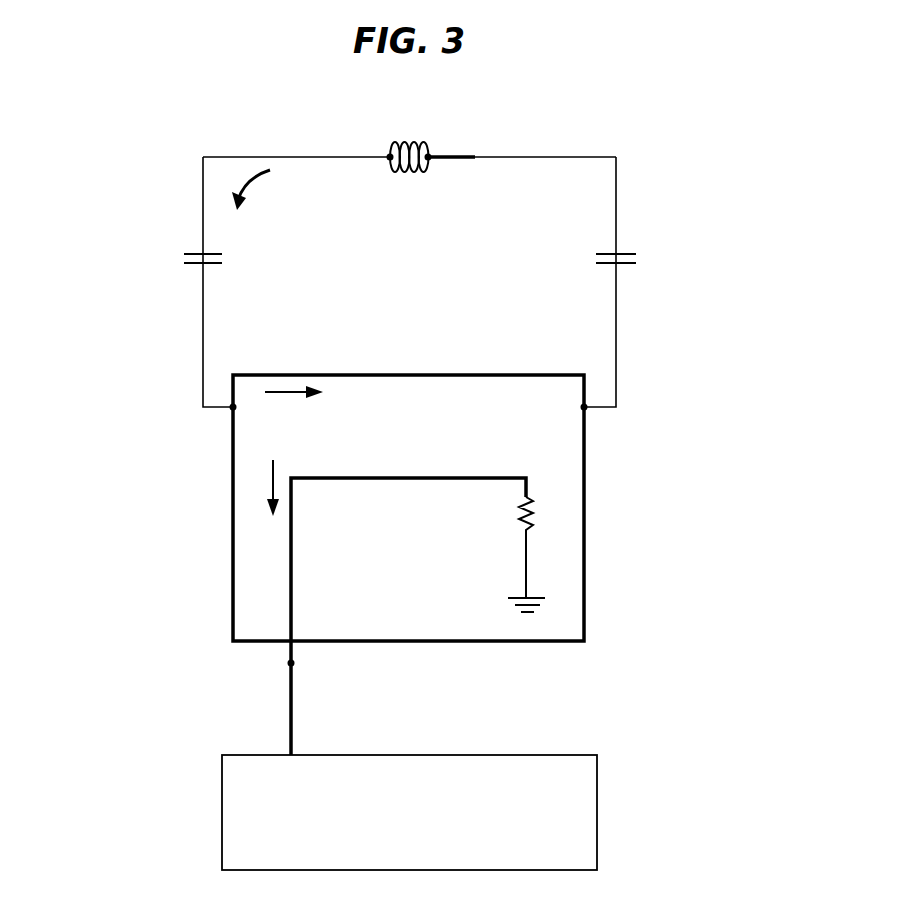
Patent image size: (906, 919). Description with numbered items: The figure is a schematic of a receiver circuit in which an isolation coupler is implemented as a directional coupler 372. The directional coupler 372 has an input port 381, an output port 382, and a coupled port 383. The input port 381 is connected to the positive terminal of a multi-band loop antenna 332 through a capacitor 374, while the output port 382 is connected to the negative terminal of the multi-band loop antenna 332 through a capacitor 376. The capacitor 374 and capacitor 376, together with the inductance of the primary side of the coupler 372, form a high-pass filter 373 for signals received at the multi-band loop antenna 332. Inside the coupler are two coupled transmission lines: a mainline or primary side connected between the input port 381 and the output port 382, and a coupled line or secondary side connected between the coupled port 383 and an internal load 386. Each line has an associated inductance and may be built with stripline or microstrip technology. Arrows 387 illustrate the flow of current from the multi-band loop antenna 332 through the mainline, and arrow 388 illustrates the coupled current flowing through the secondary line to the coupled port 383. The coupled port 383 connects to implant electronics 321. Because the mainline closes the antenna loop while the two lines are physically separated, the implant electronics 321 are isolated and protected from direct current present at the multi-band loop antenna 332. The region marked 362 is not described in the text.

The high-pass filter 373 is at (110, 172).
The antenna/receiver circuit 362 is at (715, 166).
The multi-band loop antenna 332 is at (409, 142).
The capacitor 374 is at (200, 254).
The capacitor 376 is at (620, 254).
The arrows 387 is at (246, 199).
The directional coupler 372 is at (407, 374).
The input port 381 is at (231, 408).
The output port 382 is at (586, 408).
The coupled port 383 is at (293, 664).
The internal load 386 is at (542, 598).
The arrow 388 is at (270, 487).
The implant electronics 321 is at (598, 813).